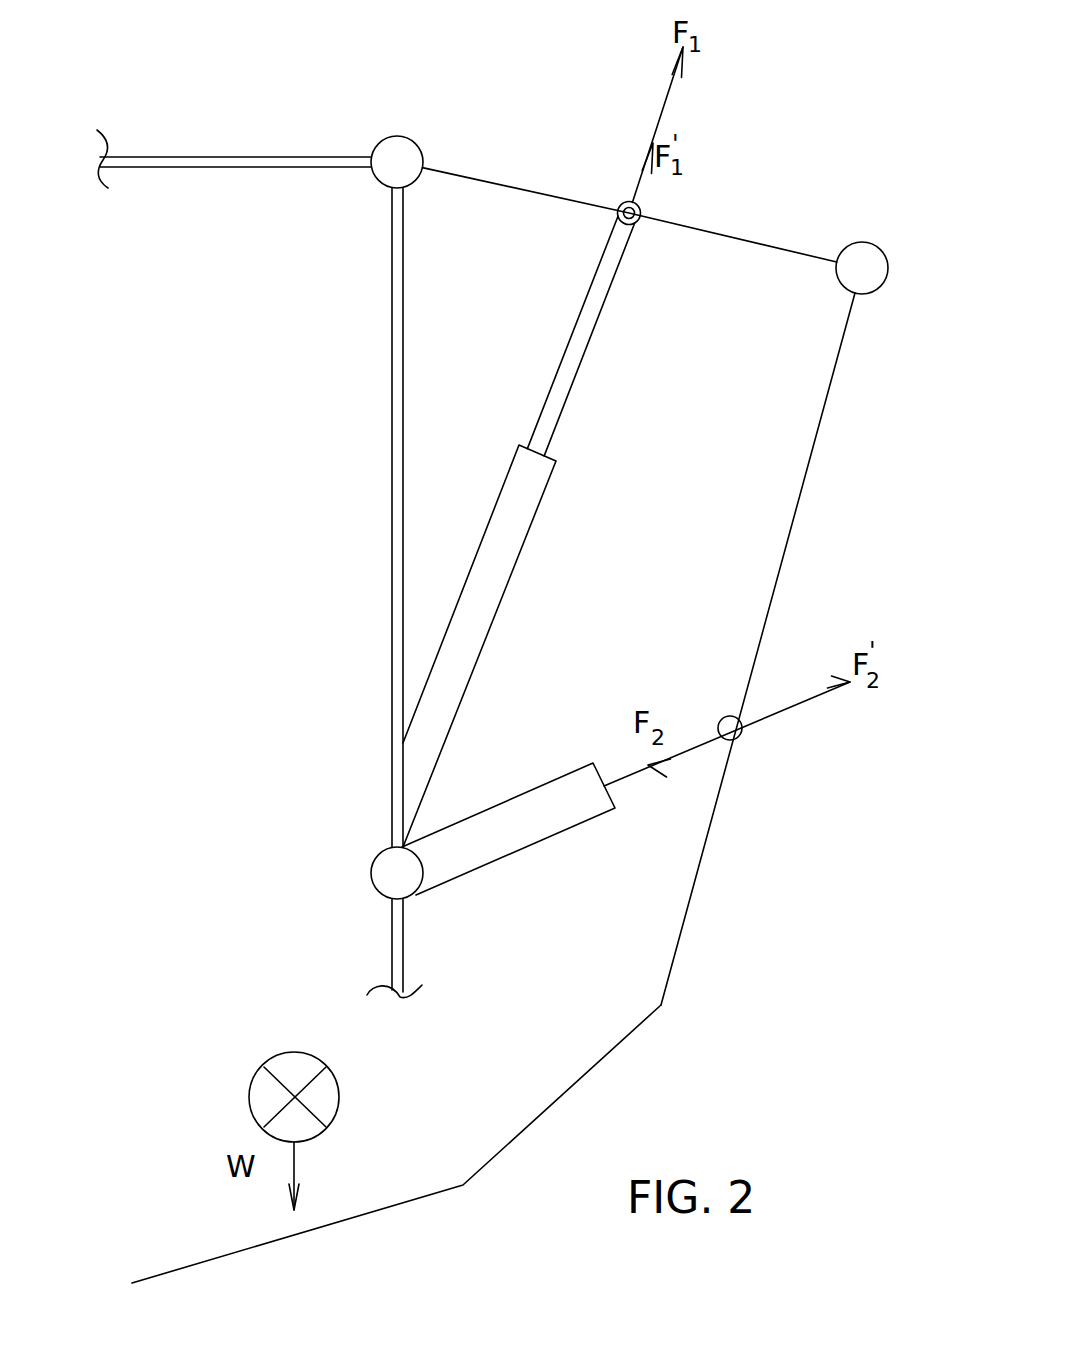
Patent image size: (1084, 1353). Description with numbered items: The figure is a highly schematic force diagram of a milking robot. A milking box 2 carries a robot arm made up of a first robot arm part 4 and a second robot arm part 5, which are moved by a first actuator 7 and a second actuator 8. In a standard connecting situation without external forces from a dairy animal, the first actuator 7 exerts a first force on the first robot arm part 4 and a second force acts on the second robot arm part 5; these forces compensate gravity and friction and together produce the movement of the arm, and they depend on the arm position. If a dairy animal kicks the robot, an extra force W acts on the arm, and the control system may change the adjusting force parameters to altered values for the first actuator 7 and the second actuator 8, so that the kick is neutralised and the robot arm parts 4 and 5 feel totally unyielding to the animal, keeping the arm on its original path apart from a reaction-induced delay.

The milking box 2 is at (218, 162).
The first robot arm part 4 is at (502, 185).
The second robot arm part 5 is at (796, 507).
The first actuator 7 is at (583, 362).
The second actuator 8 is at (510, 852).